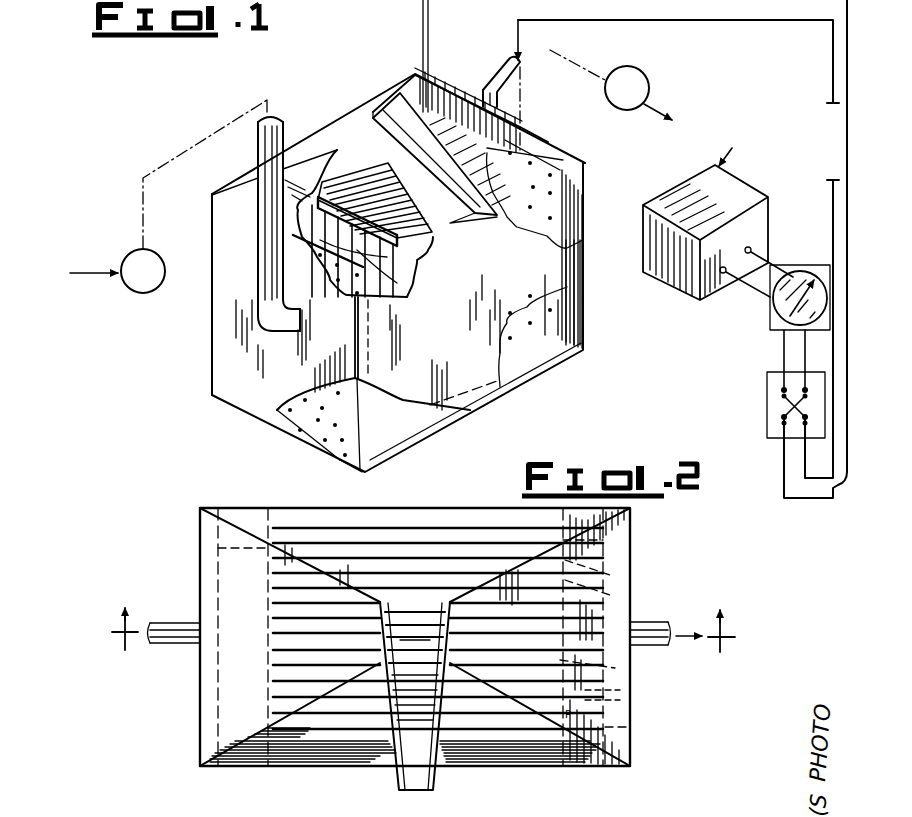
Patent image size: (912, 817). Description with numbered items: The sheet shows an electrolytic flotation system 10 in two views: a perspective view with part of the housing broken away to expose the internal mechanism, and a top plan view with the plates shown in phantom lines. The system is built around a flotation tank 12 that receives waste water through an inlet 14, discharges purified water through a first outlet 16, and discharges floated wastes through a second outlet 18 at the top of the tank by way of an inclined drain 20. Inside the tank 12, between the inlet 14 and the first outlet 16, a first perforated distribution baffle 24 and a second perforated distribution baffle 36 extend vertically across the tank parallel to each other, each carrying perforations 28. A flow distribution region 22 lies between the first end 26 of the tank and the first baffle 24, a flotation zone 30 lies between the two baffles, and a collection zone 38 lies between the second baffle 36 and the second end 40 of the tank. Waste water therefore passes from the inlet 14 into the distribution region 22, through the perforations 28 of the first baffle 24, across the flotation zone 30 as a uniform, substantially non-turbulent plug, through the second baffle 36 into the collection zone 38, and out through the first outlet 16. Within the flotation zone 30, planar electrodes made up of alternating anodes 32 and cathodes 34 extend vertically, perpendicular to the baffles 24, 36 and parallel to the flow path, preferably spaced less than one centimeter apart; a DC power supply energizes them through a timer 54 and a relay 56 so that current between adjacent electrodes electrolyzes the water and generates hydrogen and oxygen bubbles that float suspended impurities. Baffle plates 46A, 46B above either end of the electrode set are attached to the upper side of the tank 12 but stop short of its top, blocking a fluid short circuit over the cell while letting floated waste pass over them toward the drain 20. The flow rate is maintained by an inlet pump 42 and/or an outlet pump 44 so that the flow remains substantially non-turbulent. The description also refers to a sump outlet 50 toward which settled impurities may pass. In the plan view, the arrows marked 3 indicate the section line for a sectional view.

In FIG. 1, the electrolytic flotation system 10 is at (352, 108).
In FIG. 1, the flotation tank 12 is at (568, 248).
In FIG. 2, the flotation tank 12 is at (415, 637).
In FIG. 1, the inlet 14 is at (258, 315).
In FIG. 2, the inlet 14 is at (172, 622).
In FIG. 1, the first outlet 16 is at (510, 52).
In FIG. 2, the first outlet 16 is at (660, 622).
In FIG. 1, the second outlet 18 is at (428, 110).
In FIG. 2, the second outlet 18 is at (418, 625).
In FIG. 1, the inclined drain 20 is at (500, 148).
In FIG. 2, the inclined drain 20 is at (413, 757).
In FIG. 1, the flow distribution region 22 is at (346, 466).
In FIG. 1, the first perforated distribution baffle 24 is at (288, 434).
In FIG. 1, the first end of the tank 26 is at (225, 389).
In FIG. 1, the perforations 28 is at (328, 432).
In FIG. 1, the flotation zone 30 is at (358, 175).
In FIG. 1, the anodes 32 is at (368, 188).
In FIG. 2, the anodes 32 is at (612, 592).
In FIG. 1, the cathodes 34 is at (393, 260).
In FIG. 2, the cathodes 34 is at (615, 668).
In FIG. 1, the second perforated distribution baffle 36 is at (582, 318).
In FIG. 1, the collection zone 38 is at (572, 295).
In FIG. 2, the collection zone 38 is at (630, 728).
In FIG. 1, the second end of the tank 40 is at (583, 302).
In FIG. 1, the inlet pump 42 is at (150, 294).
In FIG. 1, the outlet pump 44 is at (640, 70).
In FIG. 1, the baffle plate 46A is at (410, 240).
In FIG. 2, the baffle plate 46A is at (218, 548).
In FIG. 1, the baffle plate 46B is at (560, 146).
In FIG. 2, the baffle plate 46B is at (603, 540).
In FIG. 1, the sump outlet 50 is at (736, 207).
In FIG. 1, the timer 54 is at (774, 302).
In FIG. 1, the relay 56 is at (767, 382).
In FIG. 2, the section line 3- 3 is at (423, 645).